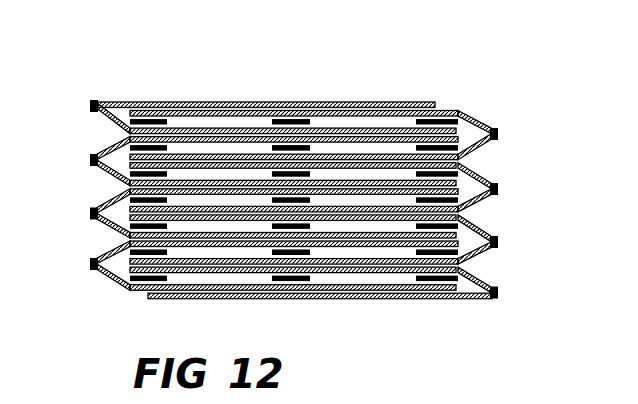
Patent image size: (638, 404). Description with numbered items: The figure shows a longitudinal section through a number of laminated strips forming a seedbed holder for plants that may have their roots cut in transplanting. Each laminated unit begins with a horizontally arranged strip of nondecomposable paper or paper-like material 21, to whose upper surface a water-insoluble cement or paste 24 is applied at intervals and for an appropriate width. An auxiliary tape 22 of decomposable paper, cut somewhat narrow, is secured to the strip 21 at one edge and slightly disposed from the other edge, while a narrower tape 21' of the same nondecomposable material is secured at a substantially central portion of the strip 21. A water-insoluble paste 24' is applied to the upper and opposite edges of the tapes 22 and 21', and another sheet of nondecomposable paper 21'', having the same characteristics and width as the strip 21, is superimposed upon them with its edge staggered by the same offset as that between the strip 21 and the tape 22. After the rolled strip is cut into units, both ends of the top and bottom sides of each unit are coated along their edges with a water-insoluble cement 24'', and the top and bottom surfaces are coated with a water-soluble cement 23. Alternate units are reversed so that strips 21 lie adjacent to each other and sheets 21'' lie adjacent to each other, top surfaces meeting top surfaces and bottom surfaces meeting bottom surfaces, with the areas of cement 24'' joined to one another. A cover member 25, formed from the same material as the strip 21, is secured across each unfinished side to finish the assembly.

The nondecomposable paper strip 21 is at (343, 180).
The narrower nondecomposable tape 21' is at (294, 246).
The nondecomposable paper sheet 21'' is at (95, 209).
The decomposable auxiliary paper tape 22 is at (143, 118).
The water-soluble cement 23 is at (217, 110).
The water-insoluble cement 24 is at (241, 202).
The water-insoluble paste 24' is at (334, 203).
The edge water-insoluble cement 24'' is at (306, 200).
The cover member 25 is at (250, 102).